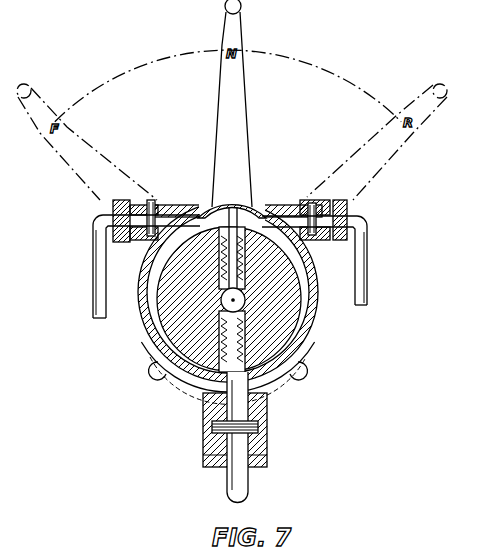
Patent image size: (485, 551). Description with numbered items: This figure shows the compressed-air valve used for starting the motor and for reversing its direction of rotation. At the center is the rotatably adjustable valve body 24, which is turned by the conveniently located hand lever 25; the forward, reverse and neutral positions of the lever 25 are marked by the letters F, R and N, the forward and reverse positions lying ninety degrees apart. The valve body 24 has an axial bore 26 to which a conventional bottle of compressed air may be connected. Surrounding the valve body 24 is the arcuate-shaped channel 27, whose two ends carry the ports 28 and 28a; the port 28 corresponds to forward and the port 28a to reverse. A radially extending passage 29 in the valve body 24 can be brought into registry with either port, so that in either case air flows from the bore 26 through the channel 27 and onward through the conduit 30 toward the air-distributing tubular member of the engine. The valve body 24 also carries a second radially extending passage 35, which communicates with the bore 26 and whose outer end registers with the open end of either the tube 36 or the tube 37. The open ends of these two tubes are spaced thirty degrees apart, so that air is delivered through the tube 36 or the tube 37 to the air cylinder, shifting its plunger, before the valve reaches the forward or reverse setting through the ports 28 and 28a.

The valve body 24 is at (185, 327).
The hand lever 25 is at (106, 165).
The axial bore 26 is at (245, 303).
The arcuate-shaped channel 27 is at (202, 384).
The port 28 is at (170, 372).
The port 28a is at (300, 377).
The radially extending passage 29 is at (212, 427).
The conduit 30 is at (240, 486).
The radially extending passage 35 is at (236, 230).
The tube 36 is at (200, 213).
The tube 37 is at (283, 215).